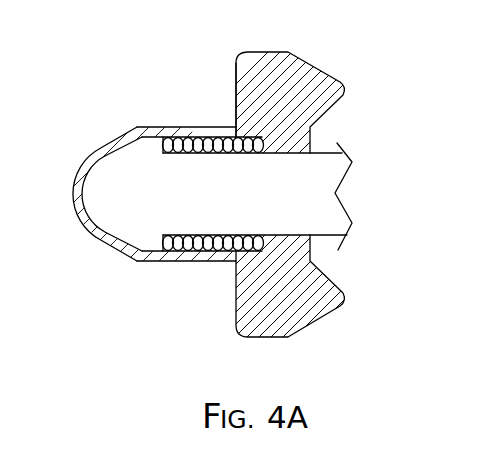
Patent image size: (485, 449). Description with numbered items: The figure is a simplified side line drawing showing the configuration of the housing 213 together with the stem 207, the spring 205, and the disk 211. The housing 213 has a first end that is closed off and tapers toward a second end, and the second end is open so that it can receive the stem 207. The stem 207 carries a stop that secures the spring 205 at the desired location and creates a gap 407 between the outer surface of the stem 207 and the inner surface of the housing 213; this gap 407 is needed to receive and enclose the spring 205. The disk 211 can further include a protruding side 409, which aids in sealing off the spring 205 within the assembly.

The spring 205 is at (160, 258).
The stem 207 is at (327, 237).
The disk 211 is at (313, 72).
The housing 213 is at (110, 146).
The gap 407 is at (202, 247).
The protruding side 409 is at (235, 93).